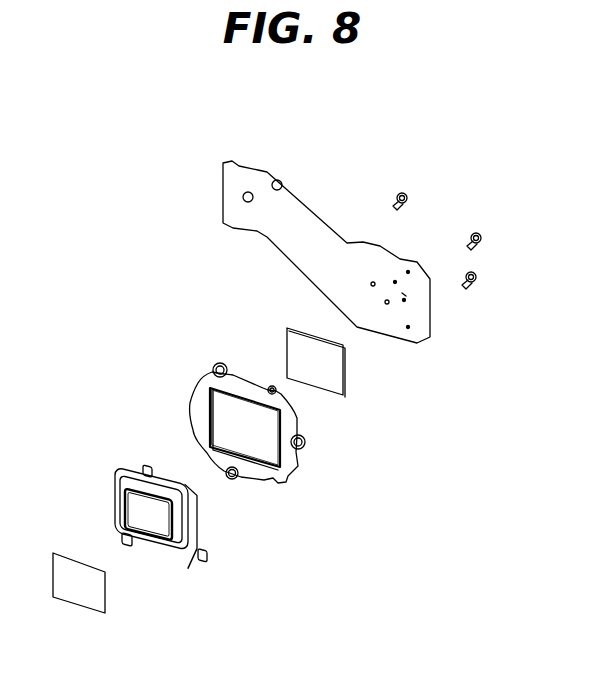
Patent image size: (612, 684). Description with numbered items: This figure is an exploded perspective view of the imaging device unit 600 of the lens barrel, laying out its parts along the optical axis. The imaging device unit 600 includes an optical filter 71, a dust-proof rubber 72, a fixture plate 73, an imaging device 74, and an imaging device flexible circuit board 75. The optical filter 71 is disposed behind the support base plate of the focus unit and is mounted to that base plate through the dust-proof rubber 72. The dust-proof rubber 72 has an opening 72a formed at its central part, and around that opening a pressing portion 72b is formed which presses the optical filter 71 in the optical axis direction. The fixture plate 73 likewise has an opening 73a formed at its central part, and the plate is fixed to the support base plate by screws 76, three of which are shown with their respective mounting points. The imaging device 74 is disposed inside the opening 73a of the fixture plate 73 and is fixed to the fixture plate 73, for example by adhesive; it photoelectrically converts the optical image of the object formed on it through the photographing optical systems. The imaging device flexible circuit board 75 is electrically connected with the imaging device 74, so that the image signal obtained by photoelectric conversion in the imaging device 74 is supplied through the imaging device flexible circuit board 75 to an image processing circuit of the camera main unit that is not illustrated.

The imaging device unit 600 is at (107, 300).
The optical filter 71 is at (105, 597).
The dust-proof rubber 72 is at (200, 512).
The opening 72a is at (138, 510).
The pressing portion 72b is at (175, 550).
The fixture plate 73 is at (300, 460).
The opening 73a is at (213, 417).
The imaging device 74 is at (345, 375).
The imaging device flexible circuit board 75 is at (427, 308).
The screws 76 is at (402, 192).